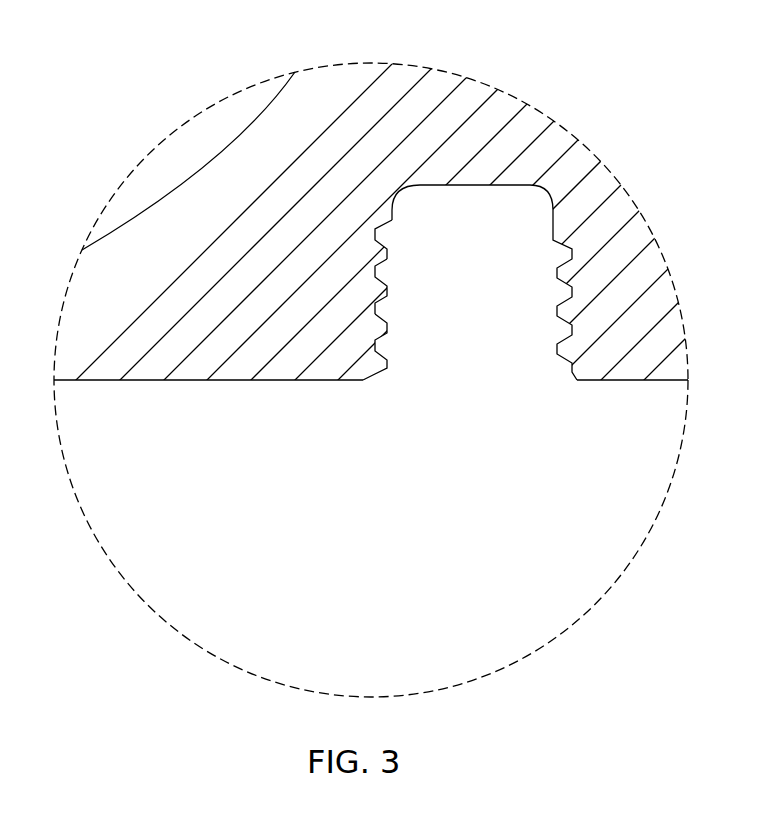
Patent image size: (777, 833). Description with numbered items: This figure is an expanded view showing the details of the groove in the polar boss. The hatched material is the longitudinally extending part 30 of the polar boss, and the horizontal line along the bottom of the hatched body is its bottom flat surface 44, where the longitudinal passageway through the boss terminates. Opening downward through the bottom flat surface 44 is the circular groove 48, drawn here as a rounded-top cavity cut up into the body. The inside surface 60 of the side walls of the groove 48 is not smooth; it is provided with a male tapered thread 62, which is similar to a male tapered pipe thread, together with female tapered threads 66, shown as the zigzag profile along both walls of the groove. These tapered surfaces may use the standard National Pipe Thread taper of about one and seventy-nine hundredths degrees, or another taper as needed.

The longitudinally extending part 30 is at (392, 97).
The bottom flat surface 44 is at (228, 381).
The circular groove 48 is at (502, 303).
The inside surface 60 is at (392, 213).
The female tapered threads 66 is at (375, 268).
The male tapered thread 62 is at (382, 343).